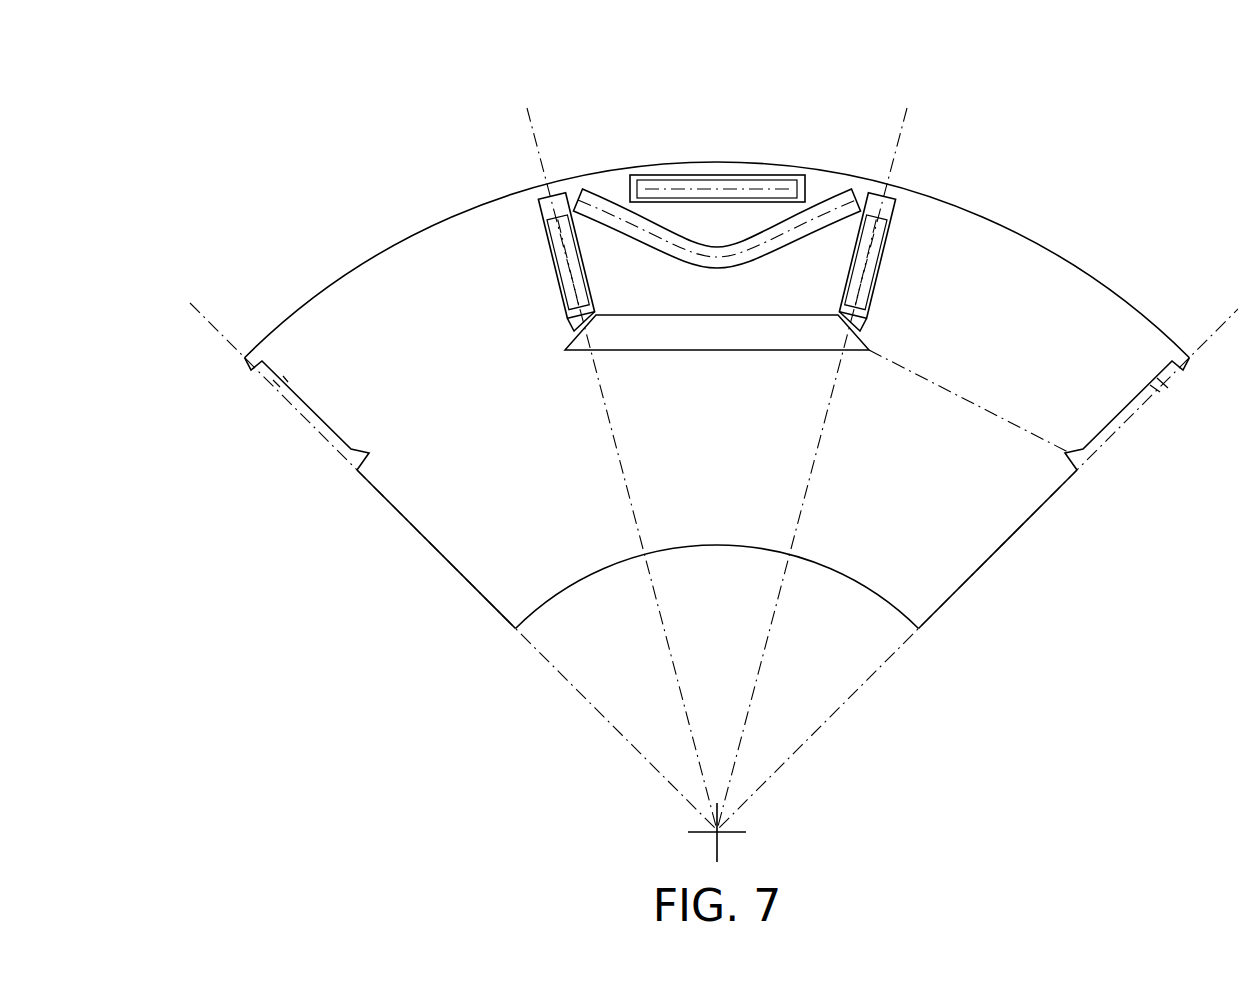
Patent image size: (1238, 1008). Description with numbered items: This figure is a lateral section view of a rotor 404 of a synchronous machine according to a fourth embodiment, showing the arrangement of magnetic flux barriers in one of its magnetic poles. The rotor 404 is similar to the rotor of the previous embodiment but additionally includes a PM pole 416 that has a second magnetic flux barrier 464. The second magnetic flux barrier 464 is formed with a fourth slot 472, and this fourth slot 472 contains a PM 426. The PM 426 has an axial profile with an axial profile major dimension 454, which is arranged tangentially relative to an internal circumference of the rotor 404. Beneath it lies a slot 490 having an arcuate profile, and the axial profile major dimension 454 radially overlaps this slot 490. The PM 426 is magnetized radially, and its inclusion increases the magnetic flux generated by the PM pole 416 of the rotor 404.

The rotor 404 is at (472, 632).
The PM pole 416 is at (710, 210).
The PM 426 is at (713, 178).
The axial profile major dimension 454 is at (677, 188).
The second magnetic flux barrier 464 is at (927, 272).
The fourth slot 472 is at (812, 187).
The slot 490 is at (663, 262).